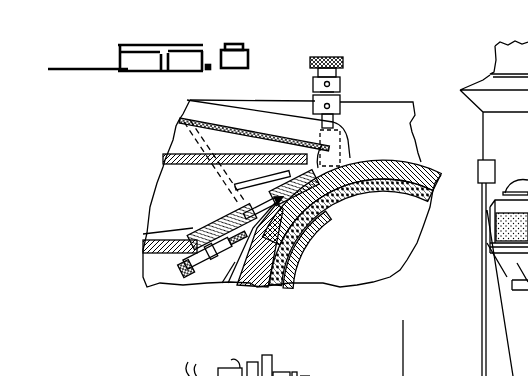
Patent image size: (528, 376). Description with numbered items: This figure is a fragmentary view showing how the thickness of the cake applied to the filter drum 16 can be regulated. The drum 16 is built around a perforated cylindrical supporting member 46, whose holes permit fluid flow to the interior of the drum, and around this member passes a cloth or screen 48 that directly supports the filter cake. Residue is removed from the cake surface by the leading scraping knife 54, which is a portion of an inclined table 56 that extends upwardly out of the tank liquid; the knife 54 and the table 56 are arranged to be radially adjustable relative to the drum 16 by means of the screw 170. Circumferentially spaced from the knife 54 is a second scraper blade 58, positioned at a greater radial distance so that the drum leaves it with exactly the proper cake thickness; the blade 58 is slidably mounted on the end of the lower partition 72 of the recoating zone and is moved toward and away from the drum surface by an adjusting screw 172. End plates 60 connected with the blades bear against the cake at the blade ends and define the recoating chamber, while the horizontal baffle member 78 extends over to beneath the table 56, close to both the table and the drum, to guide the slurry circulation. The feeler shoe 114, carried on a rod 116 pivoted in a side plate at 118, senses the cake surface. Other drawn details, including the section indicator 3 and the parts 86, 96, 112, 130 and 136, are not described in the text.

The section line 3 is at (377, 330).
The drum 16 is at (427, 165).
The cylindrical supporting member 46 is at (275, 265).
The cloth or screen 48 is at (240, 283).
The scraping knife 54 is at (350, 157).
The inclined table 56 is at (234, 133).
The second scraper blade 58 is at (290, 242).
The end plates 60 is at (290, 126).
The lower partition 72 is at (160, 253).
The horizontal partition or baffle member 78 is at (171, 165).
The crucible 86 is at (505, 247).
The support 96 is at (527, 312).
The base 112 is at (421, 374).
The foot or shoe 114 is at (312, 192).
The rod 116 is at (259, 175).
The pivot 118 is at (233, 194).
The base structure 130 is at (306, 374).
The housing 136 is at (217, 375).
The screw 170 is at (337, 120).
The adjusting screw 172 is at (227, 280).